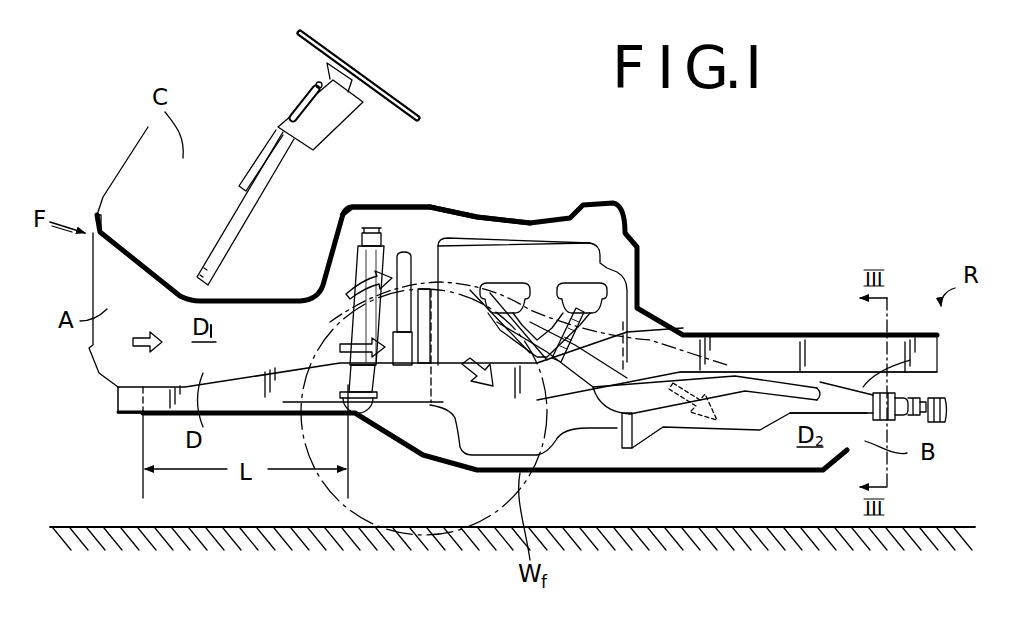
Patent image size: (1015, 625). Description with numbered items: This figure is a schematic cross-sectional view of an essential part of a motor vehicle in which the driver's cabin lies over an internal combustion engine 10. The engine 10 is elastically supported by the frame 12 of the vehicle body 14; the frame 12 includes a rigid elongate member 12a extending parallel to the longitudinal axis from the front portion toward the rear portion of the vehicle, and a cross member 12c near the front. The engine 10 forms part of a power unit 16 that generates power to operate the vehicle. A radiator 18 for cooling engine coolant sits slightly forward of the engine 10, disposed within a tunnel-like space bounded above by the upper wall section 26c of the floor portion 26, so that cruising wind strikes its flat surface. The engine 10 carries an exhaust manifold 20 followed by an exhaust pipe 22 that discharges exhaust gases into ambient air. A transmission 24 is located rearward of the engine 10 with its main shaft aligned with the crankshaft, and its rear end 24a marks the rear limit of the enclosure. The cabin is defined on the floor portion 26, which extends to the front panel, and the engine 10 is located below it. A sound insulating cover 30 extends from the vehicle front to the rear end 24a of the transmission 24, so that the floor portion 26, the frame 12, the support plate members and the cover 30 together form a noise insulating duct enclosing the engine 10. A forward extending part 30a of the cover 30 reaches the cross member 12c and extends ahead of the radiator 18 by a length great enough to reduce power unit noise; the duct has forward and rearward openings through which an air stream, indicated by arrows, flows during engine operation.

The internal combustion engine 10 is at (411, 208).
The frame 12 is at (282, 369).
The elongate member 12a is at (727, 343).
The cross member 12c is at (128, 398).
The vehicle body 14 is at (440, 178).
The power unit 16 is at (543, 240).
The radiator 18 is at (355, 268).
The exhaust manifold 20 is at (578, 307).
The exhaust pipe 22 is at (635, 452).
The transmission 24 is at (740, 437).
The rear end of the transmission 24a is at (910, 360).
The floor portion 26 is at (525, 221).
The upper wall section 26c is at (477, 211).
The sound insulating cover 30 is at (797, 470).
The forward extending part 30a is at (170, 414).